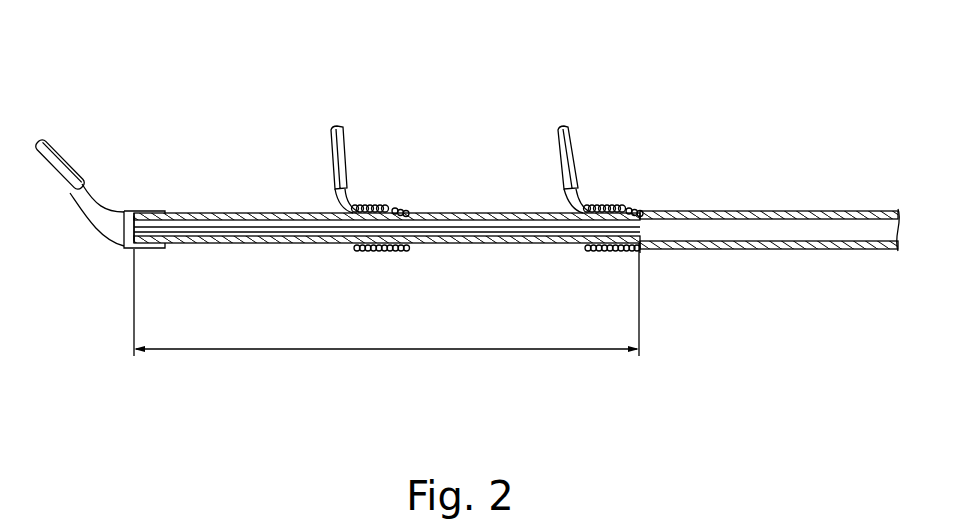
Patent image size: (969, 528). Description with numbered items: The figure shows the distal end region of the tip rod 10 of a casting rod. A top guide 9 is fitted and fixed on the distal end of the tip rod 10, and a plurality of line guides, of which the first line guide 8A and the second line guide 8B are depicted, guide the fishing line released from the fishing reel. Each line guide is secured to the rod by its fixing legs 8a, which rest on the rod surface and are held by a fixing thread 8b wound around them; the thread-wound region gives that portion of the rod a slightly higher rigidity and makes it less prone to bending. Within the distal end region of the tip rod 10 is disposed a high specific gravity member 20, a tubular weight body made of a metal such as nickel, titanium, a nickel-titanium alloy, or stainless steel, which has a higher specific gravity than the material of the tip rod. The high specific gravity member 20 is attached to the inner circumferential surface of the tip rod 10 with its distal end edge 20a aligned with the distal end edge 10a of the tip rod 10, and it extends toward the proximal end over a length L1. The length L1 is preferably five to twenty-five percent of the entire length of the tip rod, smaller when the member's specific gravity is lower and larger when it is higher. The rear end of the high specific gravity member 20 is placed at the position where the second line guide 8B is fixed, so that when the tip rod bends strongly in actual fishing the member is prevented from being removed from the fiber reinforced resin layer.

The line guide 8A is at (345, 118).
The second line guide 8B is at (575, 118).
The fixing leg 8a is at (378, 205).
The fixing thread 8b is at (398, 211).
The top guide 9 is at (48, 131).
The tip rod 10 is at (786, 212).
The distal end edge of the tip rod 10a is at (129, 211).
The high specific gravity member 20 is at (486, 233).
The distal end edge of the high specific gravity member 20a is at (135, 233).
The length of the high specific gravity member L1 is at (386, 299).